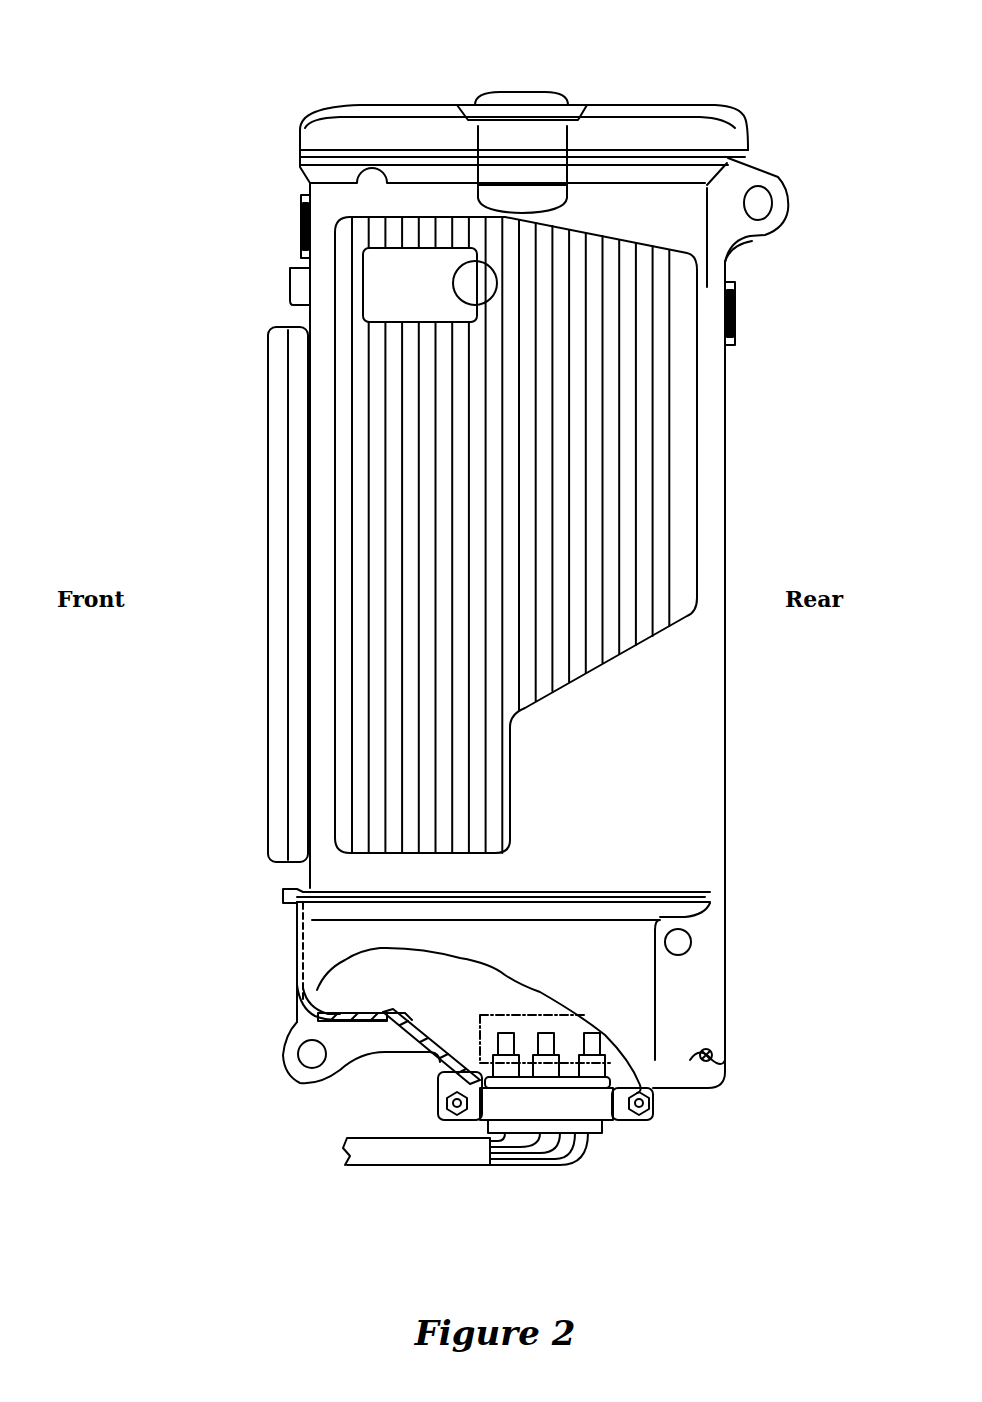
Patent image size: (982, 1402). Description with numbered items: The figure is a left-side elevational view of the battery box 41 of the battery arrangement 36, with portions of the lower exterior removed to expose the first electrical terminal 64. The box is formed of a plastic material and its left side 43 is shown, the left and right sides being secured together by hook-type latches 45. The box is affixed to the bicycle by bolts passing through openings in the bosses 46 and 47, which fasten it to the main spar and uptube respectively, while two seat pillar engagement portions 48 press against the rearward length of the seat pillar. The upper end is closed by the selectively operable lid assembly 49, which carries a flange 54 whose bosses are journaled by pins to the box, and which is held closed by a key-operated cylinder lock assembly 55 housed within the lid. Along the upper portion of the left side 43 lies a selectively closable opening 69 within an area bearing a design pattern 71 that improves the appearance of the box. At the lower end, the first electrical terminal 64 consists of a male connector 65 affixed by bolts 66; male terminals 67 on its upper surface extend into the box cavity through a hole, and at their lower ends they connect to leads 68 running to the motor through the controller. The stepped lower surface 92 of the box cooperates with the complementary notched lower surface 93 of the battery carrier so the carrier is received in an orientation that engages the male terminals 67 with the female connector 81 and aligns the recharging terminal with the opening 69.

The battery arrangement 36 is at (705, 68).
The battery box 41 is at (262, 278).
The left side 43 is at (715, 742).
The hook-type latches 45 is at (300, 215).
The boss 46 is at (292, 1080).
The boss 47 is at (770, 172).
The seat pillar engagement portions 48 is at (268, 548).
The selectively operable lid assembly 49 is at (390, 90).
The flange 54 is at (300, 140).
The cylinder lock assembly 55 is at (540, 100).
The first electrical terminal 64 is at (705, 1153).
The male connector 65 is at (600, 1112).
The bolts 66 is at (438, 1100).
The male terminals 67 is at (592, 1030).
The leads 68 is at (540, 1170).
The selectively closable opening 69 is at (370, 292).
The design pattern 71 is at (365, 680).
The female connector 81 is at (492, 1010).
The lower surface 92 is at (317, 993).
The notched lower surface 93 is at (420, 1005).